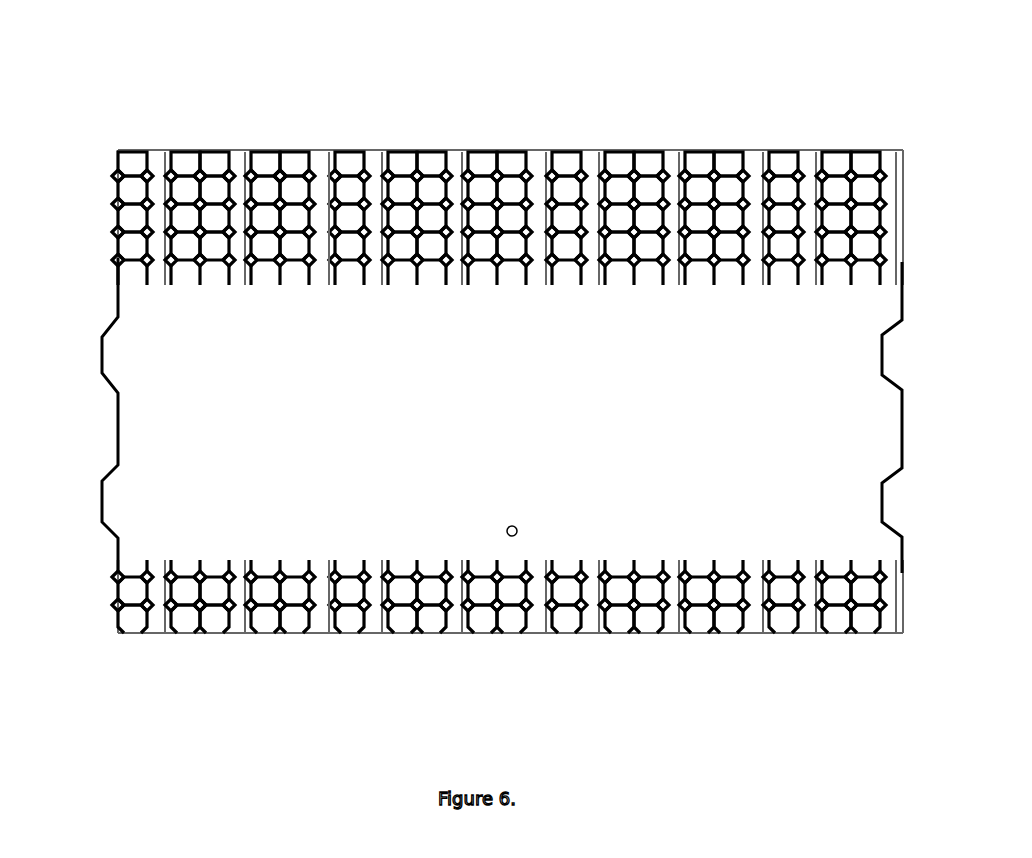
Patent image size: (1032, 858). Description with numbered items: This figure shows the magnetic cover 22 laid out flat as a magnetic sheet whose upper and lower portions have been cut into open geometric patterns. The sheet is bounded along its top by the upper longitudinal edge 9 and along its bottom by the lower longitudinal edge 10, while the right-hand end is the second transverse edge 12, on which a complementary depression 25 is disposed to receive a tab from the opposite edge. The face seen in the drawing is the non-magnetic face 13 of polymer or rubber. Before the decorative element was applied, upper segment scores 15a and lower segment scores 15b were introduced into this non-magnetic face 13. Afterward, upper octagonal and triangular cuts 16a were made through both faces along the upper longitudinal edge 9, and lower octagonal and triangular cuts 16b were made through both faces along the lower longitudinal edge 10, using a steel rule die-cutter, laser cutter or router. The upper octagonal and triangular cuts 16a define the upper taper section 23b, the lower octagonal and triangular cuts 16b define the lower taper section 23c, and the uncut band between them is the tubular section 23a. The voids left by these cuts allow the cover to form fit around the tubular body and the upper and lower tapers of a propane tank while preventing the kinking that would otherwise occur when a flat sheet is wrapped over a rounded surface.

The upper longitudinal edge 9 is at (540, 150).
The lower longitudinal edge 10 is at (400, 632).
The second transverse edge 12 is at (902, 176).
The non-magnetic face 13 is at (514, 536).
The upper segment scores 15a is at (278, 177).
The lower segment scores 15b is at (207, 610).
The upper octagonal and triangular cuts 16a is at (335, 180).
The lower octagonal and triangular cuts 16b is at (325, 620).
The magnetic cover 22 is at (742, 118).
The tubular section 23a is at (108, 258).
The upper taper section 23b is at (104, 155).
The lower taper section 23c is at (104, 558).
The depression 25 is at (895, 508).